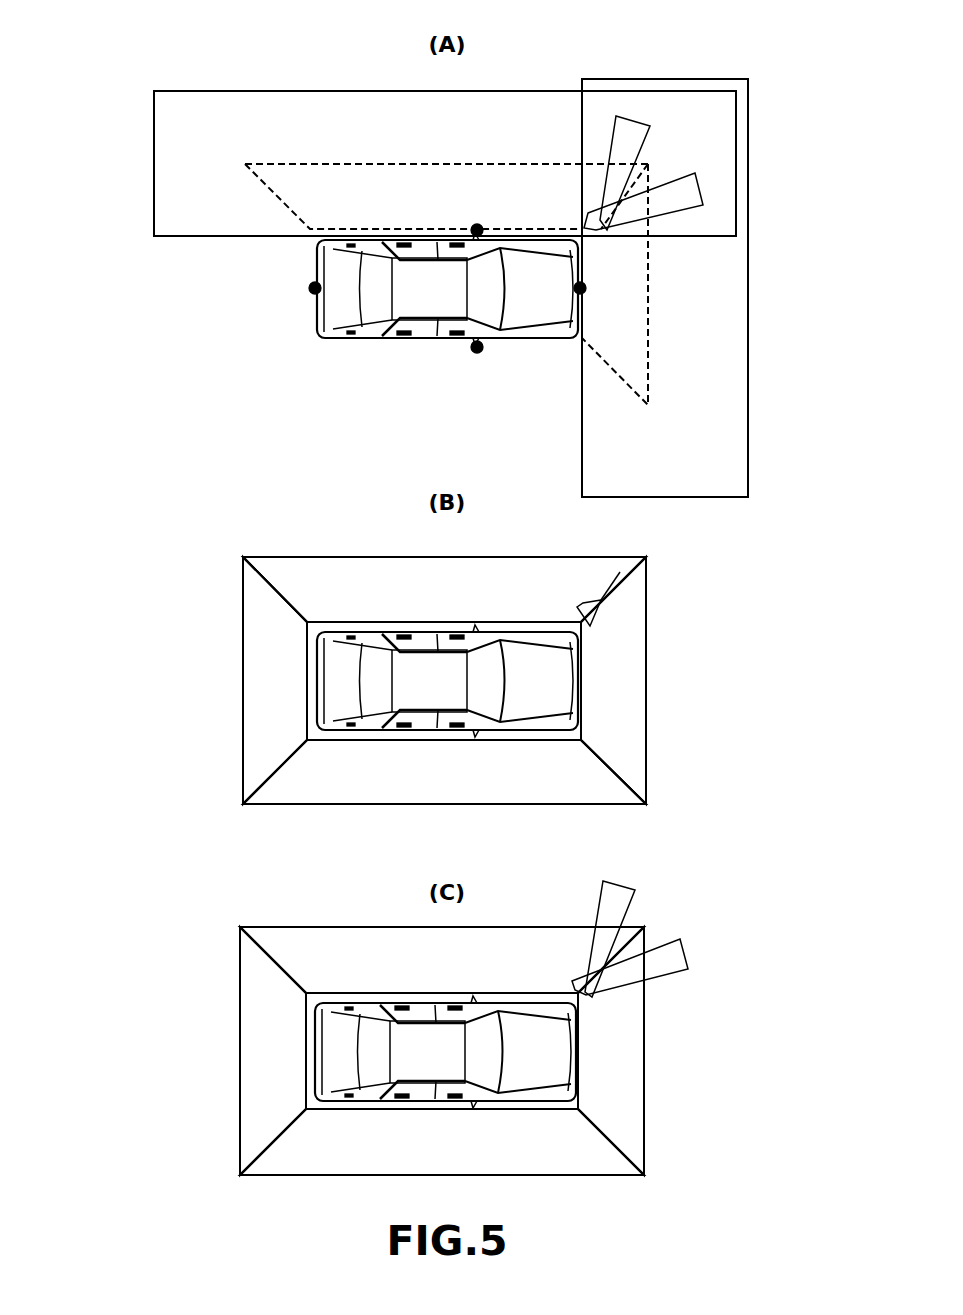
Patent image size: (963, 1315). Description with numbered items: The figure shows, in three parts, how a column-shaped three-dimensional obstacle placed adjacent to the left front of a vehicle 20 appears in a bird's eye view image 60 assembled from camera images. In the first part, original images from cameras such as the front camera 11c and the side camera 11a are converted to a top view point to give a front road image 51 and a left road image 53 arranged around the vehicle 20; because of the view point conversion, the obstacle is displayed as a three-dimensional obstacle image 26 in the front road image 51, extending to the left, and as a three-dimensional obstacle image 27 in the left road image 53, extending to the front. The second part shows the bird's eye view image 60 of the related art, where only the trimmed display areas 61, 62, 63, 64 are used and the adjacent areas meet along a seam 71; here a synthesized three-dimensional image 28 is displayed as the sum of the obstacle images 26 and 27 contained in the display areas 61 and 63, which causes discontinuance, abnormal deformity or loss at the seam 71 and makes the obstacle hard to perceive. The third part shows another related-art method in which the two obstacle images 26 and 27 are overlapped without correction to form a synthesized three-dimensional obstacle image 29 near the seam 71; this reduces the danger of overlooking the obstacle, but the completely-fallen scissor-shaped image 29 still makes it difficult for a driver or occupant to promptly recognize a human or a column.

The vehicle 20 is at (420, 285).
The left road image 53 is at (368, 91).
The display area 63 is at (480, 187).
The camera 11c is at (478, 228).
The three-dimensional obstacle image 26 is at (630, 117).
The three-dimensional obstacle image 27 is at (695, 180).
The front road image 51 is at (748, 272).
The display area 61 is at (637, 282).
The camera 11a is at (582, 290).
The bird's eye view image 60 is at (373, 556).
The seam 71 is at (618, 572).
The synthesized three-dimensional image 28 is at (608, 614).
The display area 62 is at (270, 667).
The display area 64 is at (307, 778).
The synthesized three-dimensional obstacle image 29 is at (645, 945).